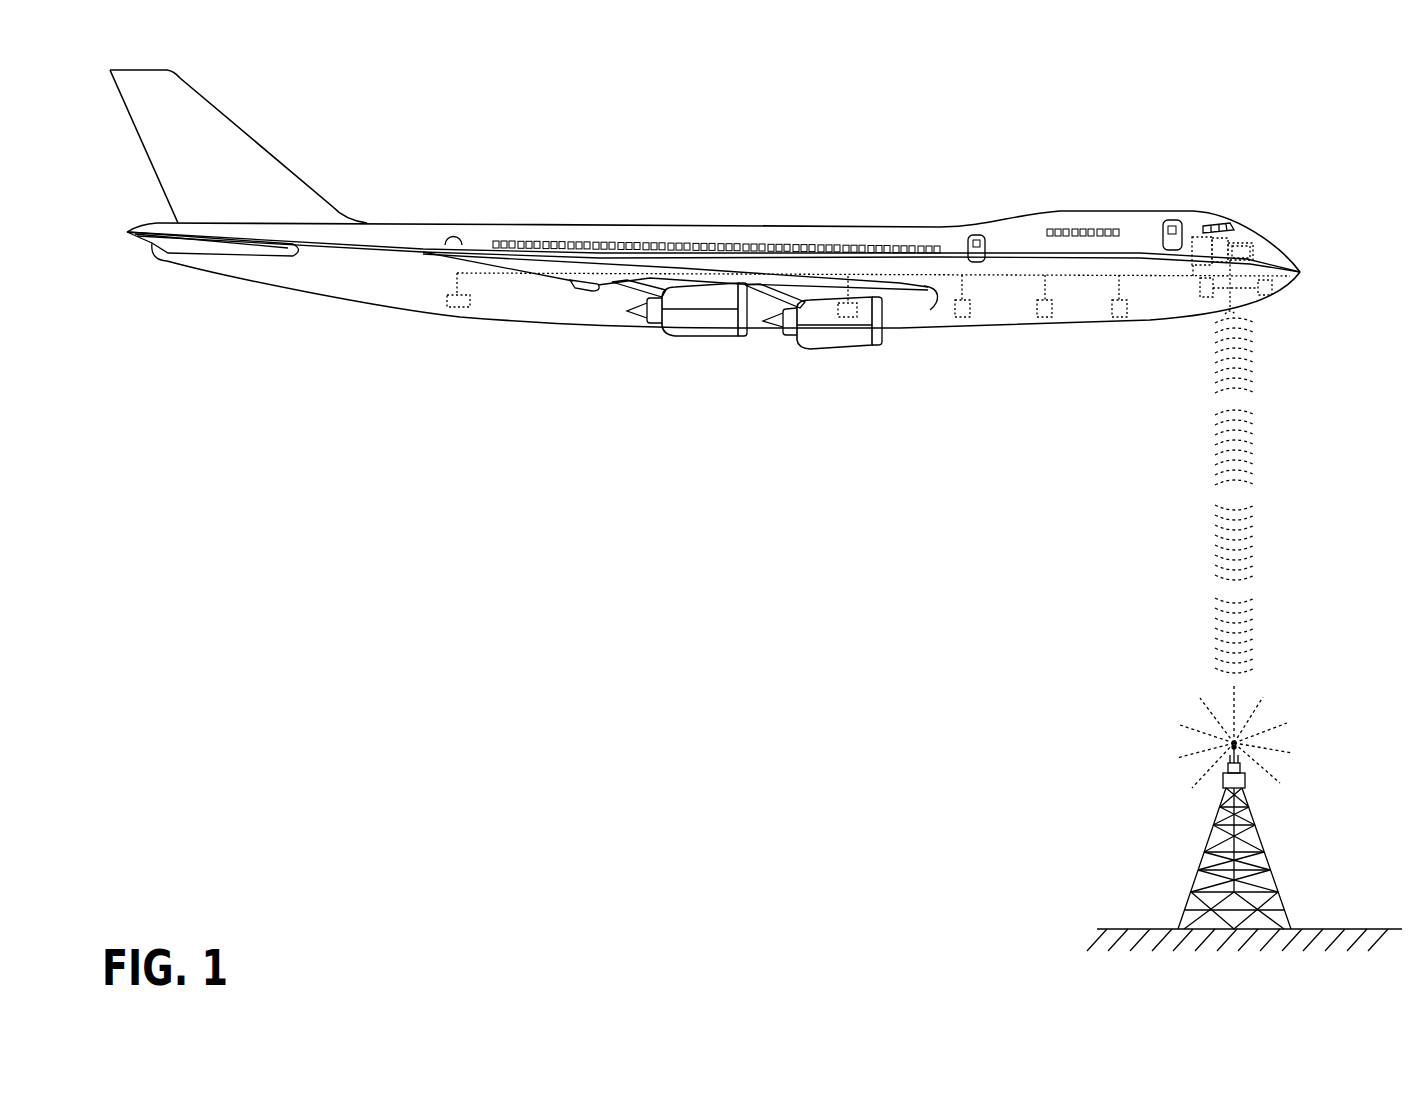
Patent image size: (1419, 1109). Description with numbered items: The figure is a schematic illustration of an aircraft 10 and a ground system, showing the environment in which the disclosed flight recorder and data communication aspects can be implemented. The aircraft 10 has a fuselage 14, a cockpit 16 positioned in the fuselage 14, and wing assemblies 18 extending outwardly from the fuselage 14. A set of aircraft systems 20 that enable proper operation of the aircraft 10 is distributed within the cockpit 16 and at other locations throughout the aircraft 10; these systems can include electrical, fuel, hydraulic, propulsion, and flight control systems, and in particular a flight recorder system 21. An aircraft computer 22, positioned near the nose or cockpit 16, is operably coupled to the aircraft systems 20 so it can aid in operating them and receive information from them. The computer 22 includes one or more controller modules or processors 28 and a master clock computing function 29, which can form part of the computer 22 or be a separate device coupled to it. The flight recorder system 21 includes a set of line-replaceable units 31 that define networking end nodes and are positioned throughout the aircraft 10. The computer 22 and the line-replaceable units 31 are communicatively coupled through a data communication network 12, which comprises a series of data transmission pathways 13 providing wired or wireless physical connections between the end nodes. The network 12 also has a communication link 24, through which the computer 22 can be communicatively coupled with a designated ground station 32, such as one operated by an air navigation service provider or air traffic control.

The aircraft 10 is at (1166, 203).
The data communication network 12 is at (1070, 266).
The data transmission pathways 13 is at (1083, 275).
The fuselage 14 is at (1008, 220).
The cockpit 16 is at (1247, 233).
The wing assemblies 18 is at (613, 290).
The set of aircraft systems 20 is at (461, 308).
The flight recorder system 21 is at (1193, 233).
The aircraft computer 22 is at (1268, 250).
The communication link 24 is at (1247, 313).
The processors 28 is at (1257, 247).
The master clock computing function 29 is at (1238, 237).
The line-replaceable units 31 is at (1200, 283).
The ground station 32 is at (1270, 835).